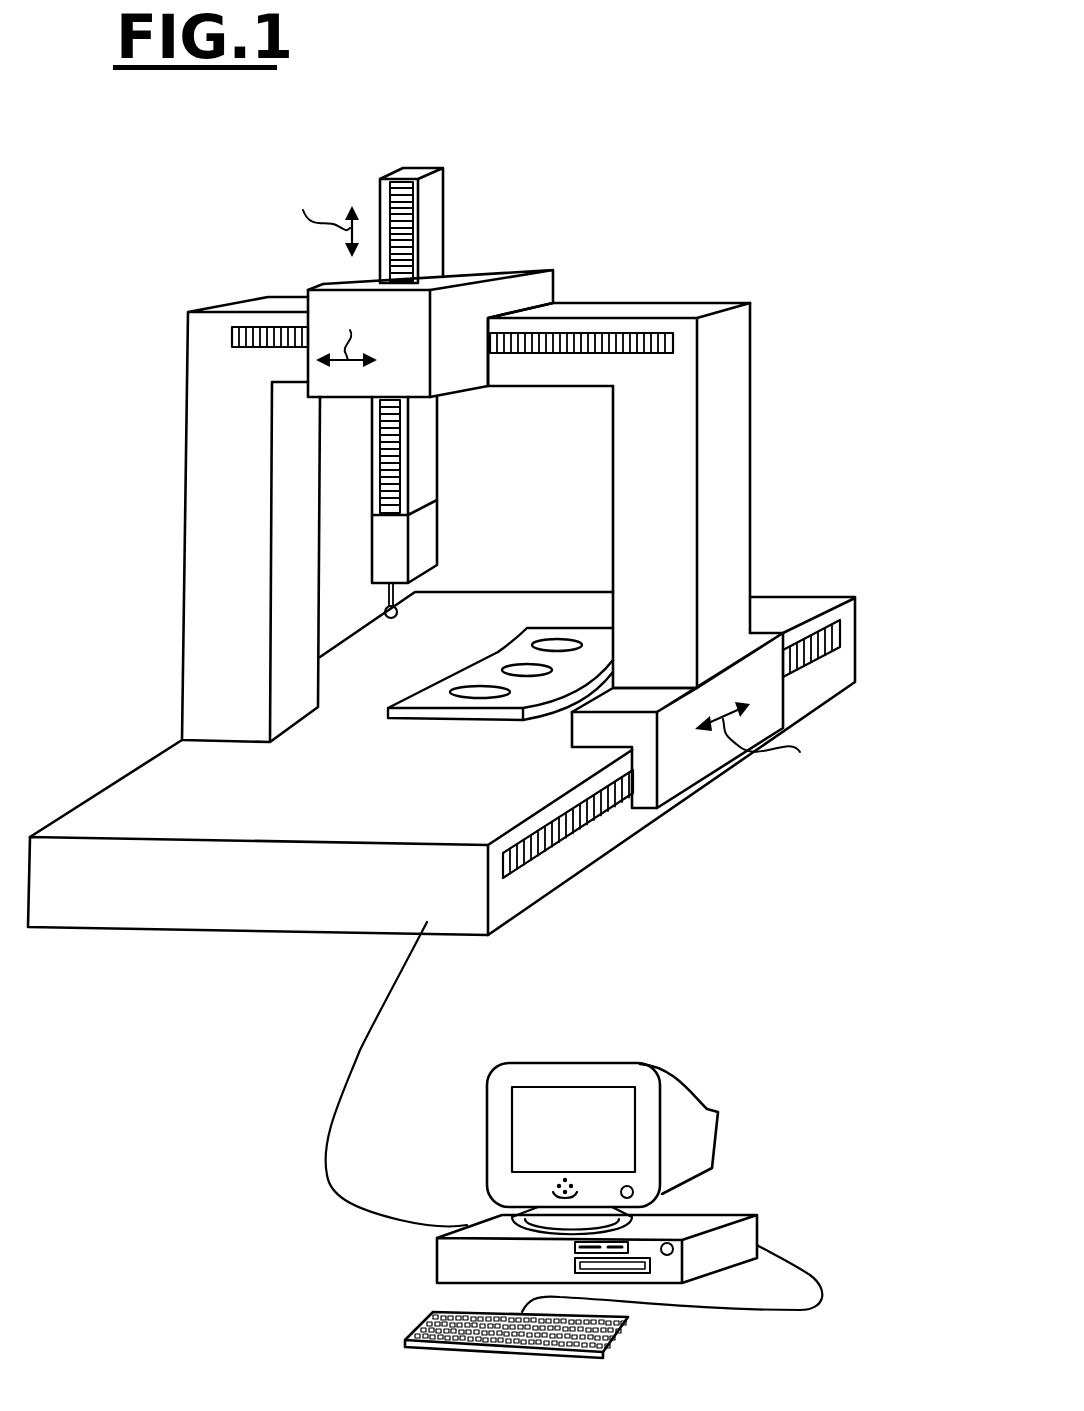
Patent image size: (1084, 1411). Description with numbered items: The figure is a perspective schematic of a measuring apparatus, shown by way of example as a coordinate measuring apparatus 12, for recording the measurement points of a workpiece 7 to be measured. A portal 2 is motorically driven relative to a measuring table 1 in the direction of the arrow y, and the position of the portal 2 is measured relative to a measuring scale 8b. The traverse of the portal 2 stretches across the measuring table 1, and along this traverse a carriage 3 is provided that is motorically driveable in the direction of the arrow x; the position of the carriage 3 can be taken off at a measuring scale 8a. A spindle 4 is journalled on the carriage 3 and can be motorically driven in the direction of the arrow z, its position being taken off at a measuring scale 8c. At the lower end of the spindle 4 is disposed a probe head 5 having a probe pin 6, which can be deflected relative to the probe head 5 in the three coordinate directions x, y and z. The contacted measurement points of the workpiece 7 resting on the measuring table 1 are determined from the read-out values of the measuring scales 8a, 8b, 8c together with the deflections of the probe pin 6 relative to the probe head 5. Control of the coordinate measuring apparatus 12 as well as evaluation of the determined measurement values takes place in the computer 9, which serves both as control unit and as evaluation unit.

The measuring table 1 is at (783, 605).
The portal 2 is at (727, 425).
The carriage 3 is at (477, 265).
The spindle 4 is at (428, 192).
The probe head 5 is at (417, 538).
The probe pin 6 is at (398, 598).
The workpiece 7 is at (493, 722).
The measuring scale 8a is at (643, 333).
The measuring scale 8b is at (843, 617).
The measuring scale 8c is at (404, 452).
The computer 9 is at (442, 1156).
The coordinate measuring apparatus 12 is at (781, 254).